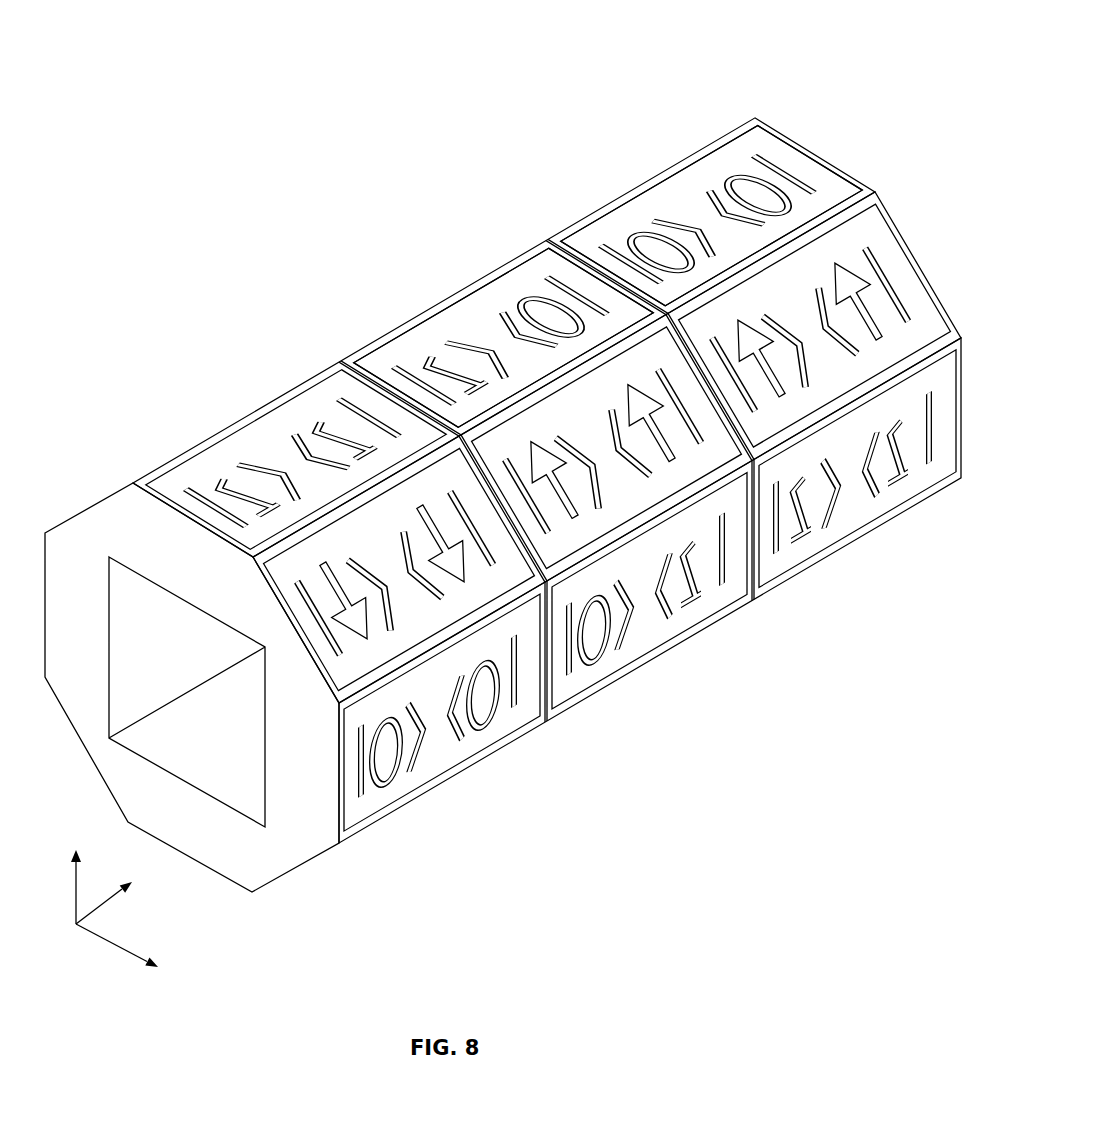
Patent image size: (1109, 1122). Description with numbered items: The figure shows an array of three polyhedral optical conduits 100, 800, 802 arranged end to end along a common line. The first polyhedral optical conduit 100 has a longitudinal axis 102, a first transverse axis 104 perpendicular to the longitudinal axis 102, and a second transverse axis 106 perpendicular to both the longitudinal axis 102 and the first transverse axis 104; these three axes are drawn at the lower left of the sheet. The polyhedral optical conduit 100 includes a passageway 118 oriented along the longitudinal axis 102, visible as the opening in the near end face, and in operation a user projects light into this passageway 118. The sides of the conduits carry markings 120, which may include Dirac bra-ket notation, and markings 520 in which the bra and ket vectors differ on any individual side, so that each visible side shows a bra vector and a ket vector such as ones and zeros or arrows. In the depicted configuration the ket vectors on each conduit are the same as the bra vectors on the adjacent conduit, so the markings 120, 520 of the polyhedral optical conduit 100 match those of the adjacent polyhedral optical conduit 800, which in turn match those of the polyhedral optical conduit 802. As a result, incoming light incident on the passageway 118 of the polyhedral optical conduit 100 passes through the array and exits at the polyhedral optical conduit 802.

The polyhedral optical conduit 100 is at (503, 447).
The longitudinal axis 102 is at (128, 894).
The first transverse axis 104 is at (77, 871).
The second transverse axis 106 is at (146, 954).
The passageway 118 is at (233, 754).
The markings 120 is at (504, 280).
The markings 520 is at (504, 337).
The polyhedral optical conduit 800 is at (547, 423).
The polyhedral optical conduit 802 is at (712, 216).